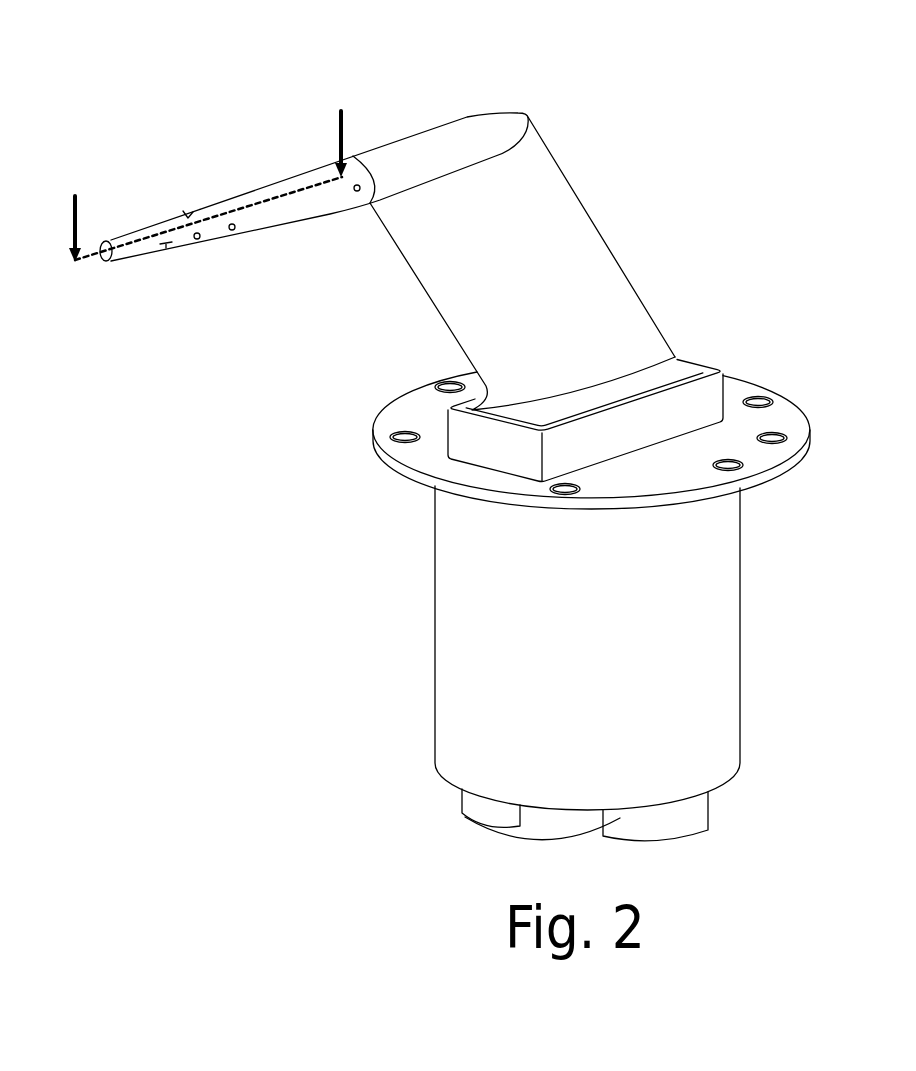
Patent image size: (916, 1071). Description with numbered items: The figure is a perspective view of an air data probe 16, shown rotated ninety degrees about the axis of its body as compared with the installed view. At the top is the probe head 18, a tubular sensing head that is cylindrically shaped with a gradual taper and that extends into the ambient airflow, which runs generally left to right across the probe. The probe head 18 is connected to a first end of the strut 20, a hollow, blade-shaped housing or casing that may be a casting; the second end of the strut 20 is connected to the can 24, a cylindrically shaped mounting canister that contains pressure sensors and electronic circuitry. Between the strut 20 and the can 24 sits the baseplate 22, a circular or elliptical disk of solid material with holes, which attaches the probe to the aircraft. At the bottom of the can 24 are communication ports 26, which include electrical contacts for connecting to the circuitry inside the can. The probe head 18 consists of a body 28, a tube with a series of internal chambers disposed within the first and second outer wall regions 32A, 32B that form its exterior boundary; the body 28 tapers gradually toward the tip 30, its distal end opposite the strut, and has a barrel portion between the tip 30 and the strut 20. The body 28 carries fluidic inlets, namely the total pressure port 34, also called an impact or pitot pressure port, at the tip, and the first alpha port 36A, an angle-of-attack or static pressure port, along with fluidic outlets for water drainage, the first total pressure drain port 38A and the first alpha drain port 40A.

The air data probe 16 is at (696, 126).
The probe head 18 is at (314, 148).
The strut 20 is at (557, 250).
The baseplate 22 is at (427, 462).
The can 24 is at (705, 587).
The communication ports 26 is at (622, 818).
The body 28 is at (283, 170).
The tip 30 is at (118, 235).
The first outer wall region 32A is at (166, 248).
The second outer wall region 32B is at (184, 216).
The total pressure port 34 is at (104, 261).
The first alpha port 36A is at (198, 241).
The first total pressure drain port 38A is at (357, 191).
The first alpha drain port 40A is at (232, 231).